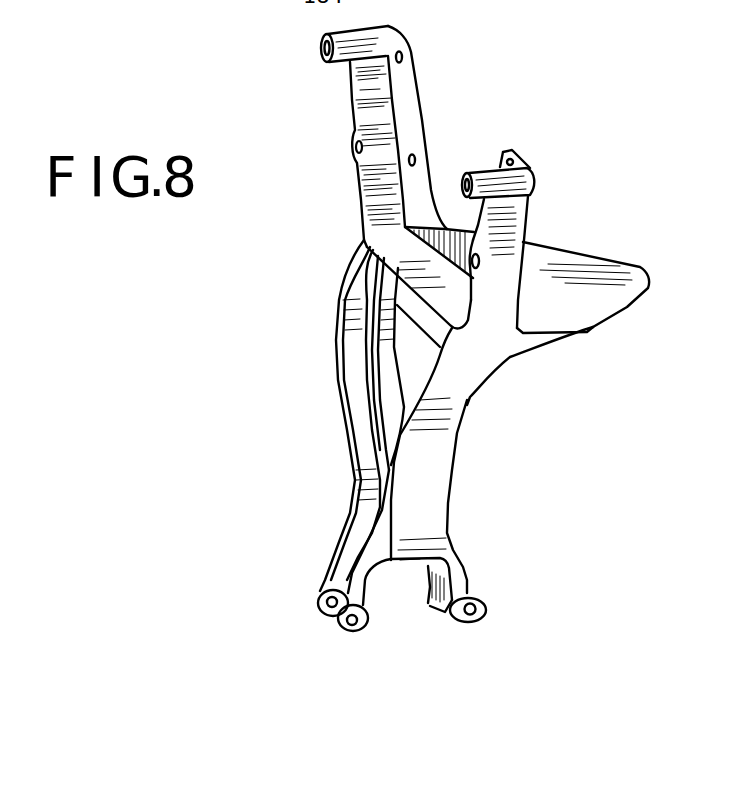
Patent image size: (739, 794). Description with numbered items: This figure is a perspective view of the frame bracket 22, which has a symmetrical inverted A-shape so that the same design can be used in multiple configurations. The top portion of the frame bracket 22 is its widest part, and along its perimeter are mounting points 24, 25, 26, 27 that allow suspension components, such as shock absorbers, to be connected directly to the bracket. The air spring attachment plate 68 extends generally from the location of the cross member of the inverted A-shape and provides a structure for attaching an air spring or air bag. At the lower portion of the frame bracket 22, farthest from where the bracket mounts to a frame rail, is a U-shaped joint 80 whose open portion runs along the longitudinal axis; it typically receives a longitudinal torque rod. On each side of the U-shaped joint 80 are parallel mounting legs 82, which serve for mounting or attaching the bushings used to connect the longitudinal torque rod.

The frame bracket 22 is at (335, 344).
The mounting point 24 is at (328, 63).
The mounting point 25 is at (355, 149).
The mounting point 26 is at (467, 172).
The mounting point 27 is at (478, 272).
The air spring attachment plate 68 is at (556, 258).
The U-shaped joint 80 is at (410, 588).
The mounting legs 82 is at (356, 631).